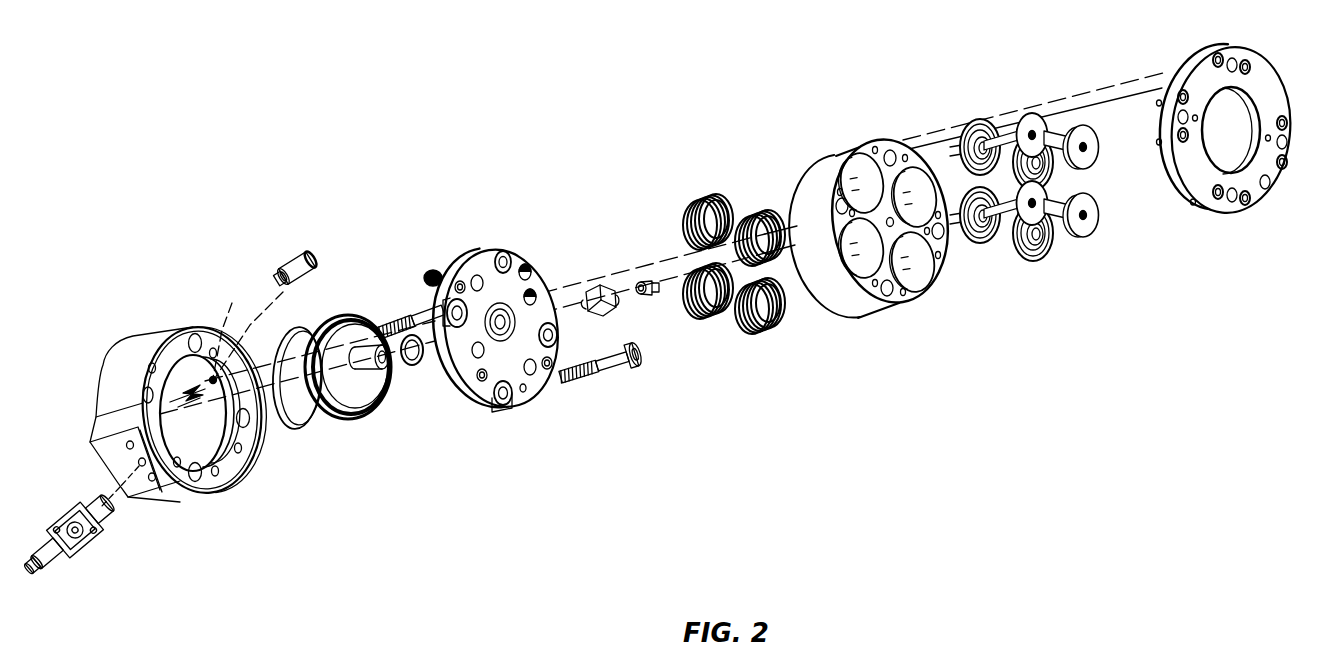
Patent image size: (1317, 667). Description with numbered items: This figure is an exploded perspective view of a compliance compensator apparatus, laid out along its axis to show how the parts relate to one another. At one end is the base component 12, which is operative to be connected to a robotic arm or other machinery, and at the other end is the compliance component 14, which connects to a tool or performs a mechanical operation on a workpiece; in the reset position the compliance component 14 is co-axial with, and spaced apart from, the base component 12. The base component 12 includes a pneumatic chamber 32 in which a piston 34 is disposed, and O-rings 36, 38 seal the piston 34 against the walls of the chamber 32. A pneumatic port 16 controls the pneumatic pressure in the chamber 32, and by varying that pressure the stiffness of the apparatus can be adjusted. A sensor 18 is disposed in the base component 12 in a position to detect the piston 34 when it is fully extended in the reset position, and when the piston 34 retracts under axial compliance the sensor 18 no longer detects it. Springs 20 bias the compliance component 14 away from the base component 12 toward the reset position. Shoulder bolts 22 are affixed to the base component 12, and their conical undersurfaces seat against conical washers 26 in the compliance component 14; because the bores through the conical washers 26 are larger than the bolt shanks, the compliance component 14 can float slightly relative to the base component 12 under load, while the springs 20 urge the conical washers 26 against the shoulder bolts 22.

The base component 12 is at (218, 529).
The compliance component 14 is at (914, 331).
The pneumatic port 16 is at (294, 252).
The sensor 18 is at (72, 565).
The springs 20 is at (702, 200).
The shoulder bolts 22 is at (1027, 116).
The conical washers 26 is at (969, 126).
The pneumatic chamber 32 is at (209, 343).
The piston 34 is at (350, 318).
The O-ring 36 is at (307, 428).
The O-ring 38 is at (418, 368).